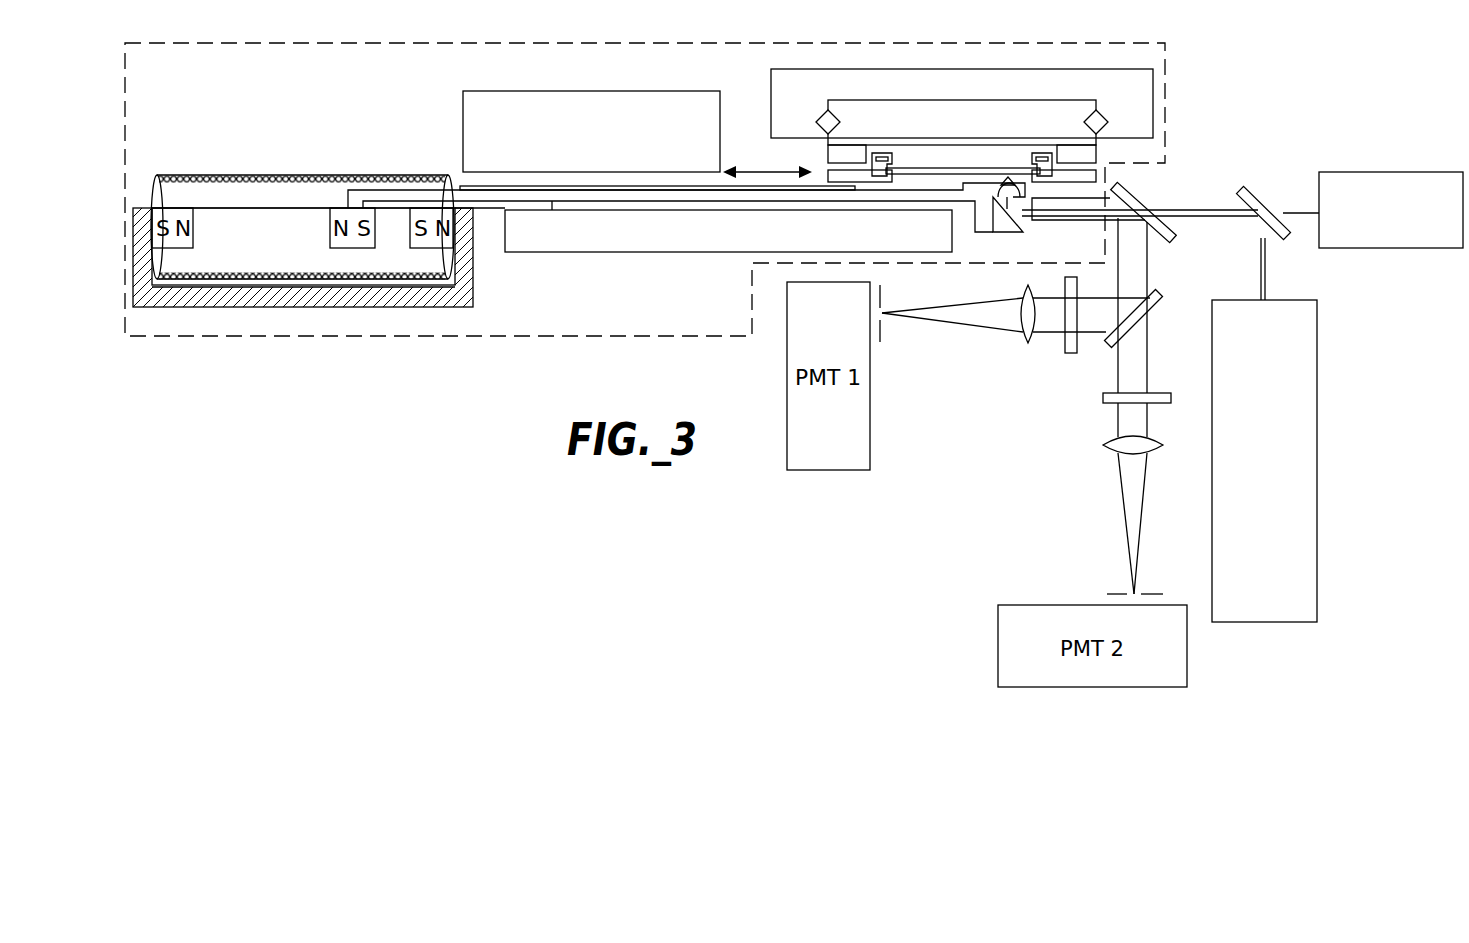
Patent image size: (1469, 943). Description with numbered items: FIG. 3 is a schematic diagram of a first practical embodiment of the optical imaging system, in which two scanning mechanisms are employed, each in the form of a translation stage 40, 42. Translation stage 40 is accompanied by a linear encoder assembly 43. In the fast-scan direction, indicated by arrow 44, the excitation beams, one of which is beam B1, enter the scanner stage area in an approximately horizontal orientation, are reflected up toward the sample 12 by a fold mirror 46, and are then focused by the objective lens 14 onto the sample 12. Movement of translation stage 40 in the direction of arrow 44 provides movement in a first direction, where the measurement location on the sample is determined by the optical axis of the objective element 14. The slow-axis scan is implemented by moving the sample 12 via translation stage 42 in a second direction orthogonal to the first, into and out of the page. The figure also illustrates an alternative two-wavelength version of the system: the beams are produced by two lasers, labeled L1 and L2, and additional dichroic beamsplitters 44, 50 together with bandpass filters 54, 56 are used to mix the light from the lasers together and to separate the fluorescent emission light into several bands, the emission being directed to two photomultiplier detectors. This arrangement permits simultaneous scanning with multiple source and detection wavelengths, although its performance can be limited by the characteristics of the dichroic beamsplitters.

The sample 12 is at (953, 163).
The objective lens 14 is at (992, 194).
The translation stage 40 is at (677, 252).
The translation stage 42 is at (1080, 98).
The linear encoder assembly 43 is at (462, 121).
The arrow / dichroic beamsplitter 44 is at (760, 170).
The fold mirror 46 is at (1010, 232).
The dichroic beamsplitter 50 is at (1150, 310).
The bandpass filter 54 is at (1064, 347).
The bandpass filter 56 is at (1103, 402).
The excitation beam B1 is at (1077, 204).
The laser 1 L1 is at (1390, 172).
The laser 2 L2 is at (1317, 393).